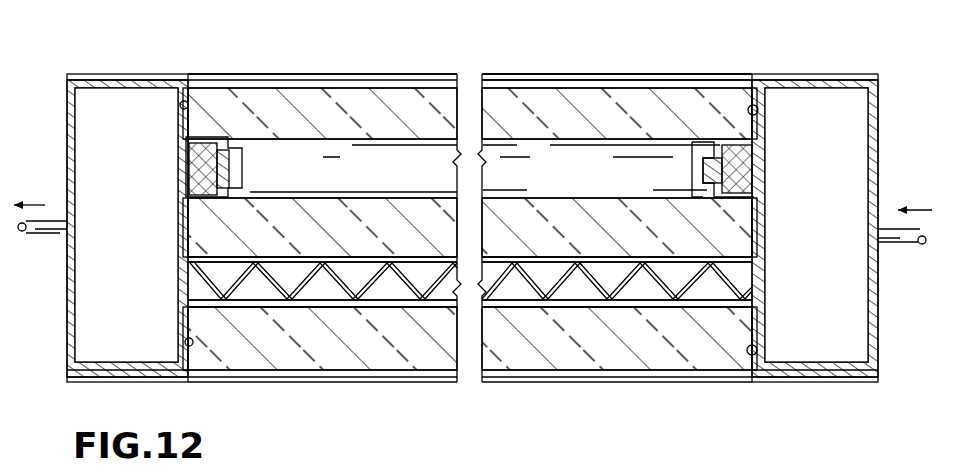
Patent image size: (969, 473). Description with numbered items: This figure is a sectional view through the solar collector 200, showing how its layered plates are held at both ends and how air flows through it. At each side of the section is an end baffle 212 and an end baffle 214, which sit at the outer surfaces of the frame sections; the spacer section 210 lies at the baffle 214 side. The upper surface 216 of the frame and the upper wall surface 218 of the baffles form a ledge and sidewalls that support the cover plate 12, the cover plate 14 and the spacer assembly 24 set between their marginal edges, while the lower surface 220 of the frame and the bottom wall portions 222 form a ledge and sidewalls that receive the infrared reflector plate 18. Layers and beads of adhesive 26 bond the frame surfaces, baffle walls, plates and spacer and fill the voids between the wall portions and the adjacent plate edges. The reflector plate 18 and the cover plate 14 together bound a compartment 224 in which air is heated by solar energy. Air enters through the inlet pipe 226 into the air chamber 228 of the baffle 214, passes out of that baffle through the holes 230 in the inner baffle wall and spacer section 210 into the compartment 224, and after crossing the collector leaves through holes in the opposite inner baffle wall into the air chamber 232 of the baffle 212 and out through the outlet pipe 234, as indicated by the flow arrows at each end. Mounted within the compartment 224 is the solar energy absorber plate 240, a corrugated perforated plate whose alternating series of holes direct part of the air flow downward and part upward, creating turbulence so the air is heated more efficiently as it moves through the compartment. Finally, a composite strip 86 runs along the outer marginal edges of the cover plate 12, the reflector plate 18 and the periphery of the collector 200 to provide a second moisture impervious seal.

The cover plate 12 is at (320, 100).
The cover plate 14 is at (530, 214).
The infrared reflector plate 18 is at (253, 385).
The spacer assembly 24 is at (245, 165).
The adhesive 26 is at (189, 88).
The composite strip 86 is at (622, 78).
The solar collector 200 is at (722, 62).
The C shaped section 210 is at (762, 262).
The end baffle 212 is at (64, 300).
The end baffle 214 is at (882, 326).
The upper surface 216 is at (232, 253).
The upper wall surface 218 is at (180, 105).
The lower surface 220 is at (212, 312).
The bottom wall portion 222 is at (185, 344).
The compartment 224 is at (287, 280).
The inlet pipe 226 is at (882, 235).
The air chamber 228 is at (843, 181).
The holes 230 is at (760, 285).
The air chamber 232 is at (143, 173).
The outlet pipe 234 is at (58, 234).
The solar energy absorber plate 240 is at (410, 272).